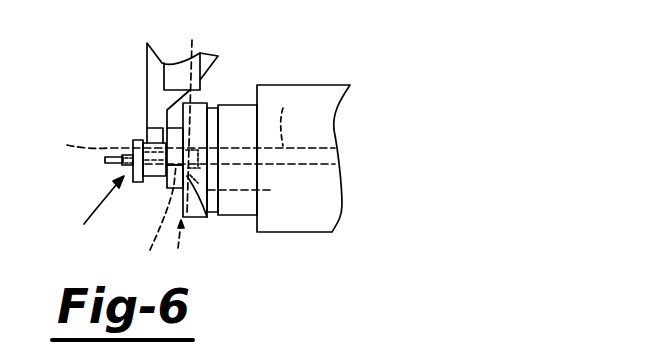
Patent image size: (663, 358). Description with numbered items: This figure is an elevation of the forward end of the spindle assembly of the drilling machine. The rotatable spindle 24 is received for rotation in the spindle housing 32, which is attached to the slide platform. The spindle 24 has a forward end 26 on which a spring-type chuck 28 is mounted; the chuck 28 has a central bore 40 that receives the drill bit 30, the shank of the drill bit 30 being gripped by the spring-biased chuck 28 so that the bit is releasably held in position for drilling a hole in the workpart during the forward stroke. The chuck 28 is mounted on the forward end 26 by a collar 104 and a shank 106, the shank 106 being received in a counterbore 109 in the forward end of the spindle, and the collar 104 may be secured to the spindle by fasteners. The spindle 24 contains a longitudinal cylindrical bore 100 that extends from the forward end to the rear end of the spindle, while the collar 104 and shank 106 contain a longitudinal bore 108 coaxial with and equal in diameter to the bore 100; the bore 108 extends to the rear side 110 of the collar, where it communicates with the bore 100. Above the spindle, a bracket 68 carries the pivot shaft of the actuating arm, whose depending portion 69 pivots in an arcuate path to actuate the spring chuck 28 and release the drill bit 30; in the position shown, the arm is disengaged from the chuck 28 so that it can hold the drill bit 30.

The spindle 24 is at (237, 107).
The forward end 26 is at (176, 250).
The chuck 28 is at (87, 207).
The drill bit 30 is at (108, 158).
The spindle housing 32 is at (272, 90).
The central bore 40 is at (186, 146).
The bracket 68 is at (173, 78).
The depending portion 69 is at (147, 128).
The longitudinal cylindrical bore 100 is at (303, 119).
The collar 104 is at (168, 189).
The shank 106 is at (259, 191).
The bore 108 is at (140, 218).
The counterbore 109 is at (191, 112).
The rear side 110 is at (207, 217).